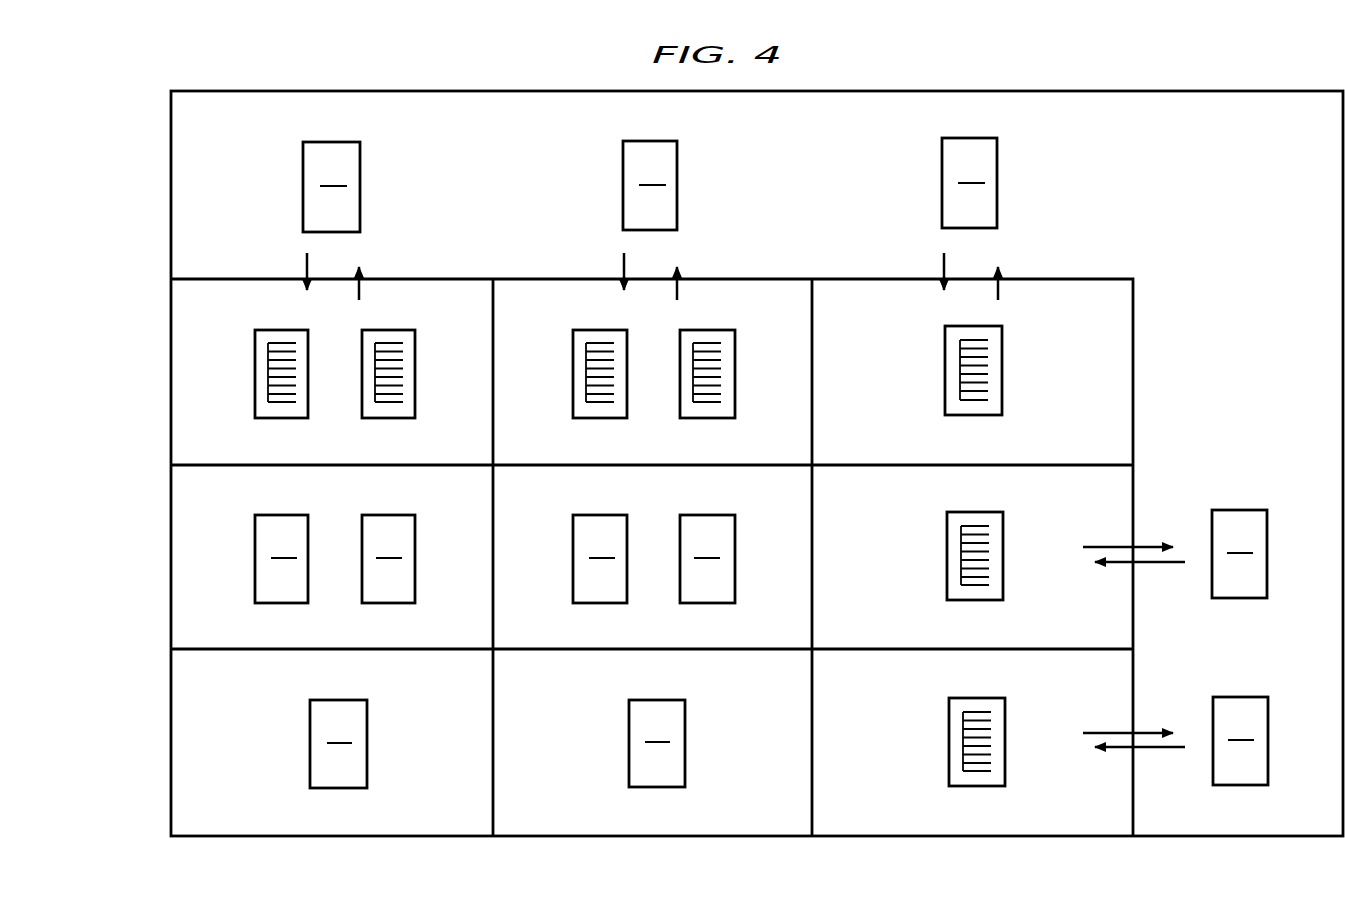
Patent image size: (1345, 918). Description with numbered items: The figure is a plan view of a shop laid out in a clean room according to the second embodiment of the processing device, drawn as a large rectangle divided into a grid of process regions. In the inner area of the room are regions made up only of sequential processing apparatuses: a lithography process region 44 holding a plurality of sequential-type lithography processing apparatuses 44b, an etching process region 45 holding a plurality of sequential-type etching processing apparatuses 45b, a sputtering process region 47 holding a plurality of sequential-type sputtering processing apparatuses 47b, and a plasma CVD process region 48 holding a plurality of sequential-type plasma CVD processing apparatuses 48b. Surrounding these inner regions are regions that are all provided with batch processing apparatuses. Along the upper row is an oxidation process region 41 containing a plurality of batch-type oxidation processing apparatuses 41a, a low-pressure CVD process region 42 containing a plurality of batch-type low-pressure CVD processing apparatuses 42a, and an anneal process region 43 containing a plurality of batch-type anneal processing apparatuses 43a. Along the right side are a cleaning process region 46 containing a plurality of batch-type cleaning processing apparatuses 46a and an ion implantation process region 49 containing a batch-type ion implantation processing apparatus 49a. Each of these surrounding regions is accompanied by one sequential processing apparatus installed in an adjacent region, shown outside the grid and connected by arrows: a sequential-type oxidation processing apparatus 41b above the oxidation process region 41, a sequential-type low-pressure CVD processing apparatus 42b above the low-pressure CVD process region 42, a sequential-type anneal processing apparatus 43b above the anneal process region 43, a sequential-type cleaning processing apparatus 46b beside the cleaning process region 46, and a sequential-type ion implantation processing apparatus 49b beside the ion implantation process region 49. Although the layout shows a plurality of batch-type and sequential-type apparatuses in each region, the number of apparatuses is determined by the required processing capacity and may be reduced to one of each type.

The oxidation process region 41 is at (420, 294).
The batch-type oxidation processing apparatus 41a is at (284, 418).
The sequential-type oxidation processing apparatus 41b is at (361, 186).
The low-pressure CVD process region 42 is at (735, 294).
The batch-type low-pressure CVD processing apparatus 42a is at (600, 418).
The sequential-type low-pressure CVD processing apparatus 42b is at (678, 185).
The anneal process region 43 is at (1052, 288).
The batch-type anneal processing apparatus 43a is at (975, 415).
The sequential-type anneal processing apparatus 43b is at (998, 183).
The lithography process region 44 is at (186, 518).
The lithography processing apparatus 44b is at (284, 603).
The etching process region 45 is at (795, 620).
The etching processing apparatus 45b is at (600, 603).
The cleaning process region 46 is at (1110, 494).
The batch-type cleaning processing apparatus 46a is at (977, 600).
The sequential-type cleaning processing apparatus 46b is at (1268, 556).
The sputtering process region 47 is at (273, 822).
The sputtering processing apparatus 47b is at (340, 788).
The plasma CVD process region 48 is at (595, 818).
The plasma CVD processing apparatus 48b is at (660, 787).
The ion implantation process region 49 is at (912, 818).
The batch-type ion implantation processing apparatus 49a is at (983, 786).
The sequential-type ion implantation processing apparatus 49b is at (1269, 744).